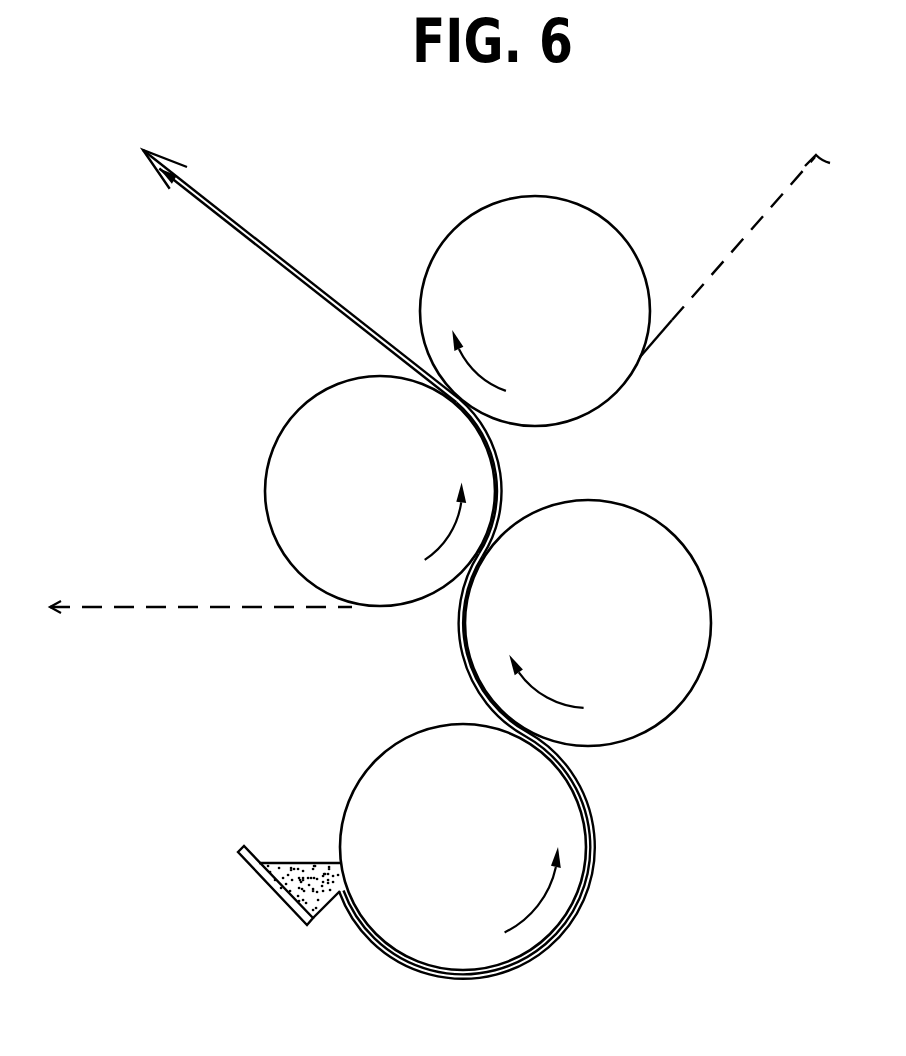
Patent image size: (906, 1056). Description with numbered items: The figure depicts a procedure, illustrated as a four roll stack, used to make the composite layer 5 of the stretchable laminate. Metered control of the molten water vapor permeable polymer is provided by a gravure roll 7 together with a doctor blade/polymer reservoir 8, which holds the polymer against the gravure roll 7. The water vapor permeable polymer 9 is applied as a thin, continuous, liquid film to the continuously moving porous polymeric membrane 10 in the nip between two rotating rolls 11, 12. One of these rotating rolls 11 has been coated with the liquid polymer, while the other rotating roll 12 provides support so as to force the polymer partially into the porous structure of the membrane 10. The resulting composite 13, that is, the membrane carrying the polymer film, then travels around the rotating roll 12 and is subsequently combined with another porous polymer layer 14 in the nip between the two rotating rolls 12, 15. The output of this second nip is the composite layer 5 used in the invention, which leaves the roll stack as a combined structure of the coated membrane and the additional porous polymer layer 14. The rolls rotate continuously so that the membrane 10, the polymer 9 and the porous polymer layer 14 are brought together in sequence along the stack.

The composite layer 5 is at (220, 208).
The gravure roll 7 is at (475, 872).
The doctor blade/polymer reservoir 8 is at (270, 907).
The water vapor permeable polymer 9 is at (455, 643).
The porous polymeric membrane 10 is at (143, 609).
The rotating roll 11 is at (603, 642).
The rotating roll 12 is at (397, 513).
The composite 13 is at (501, 480).
The porous polymer layer 14 is at (716, 268).
The rotating roll 15 is at (553, 332).